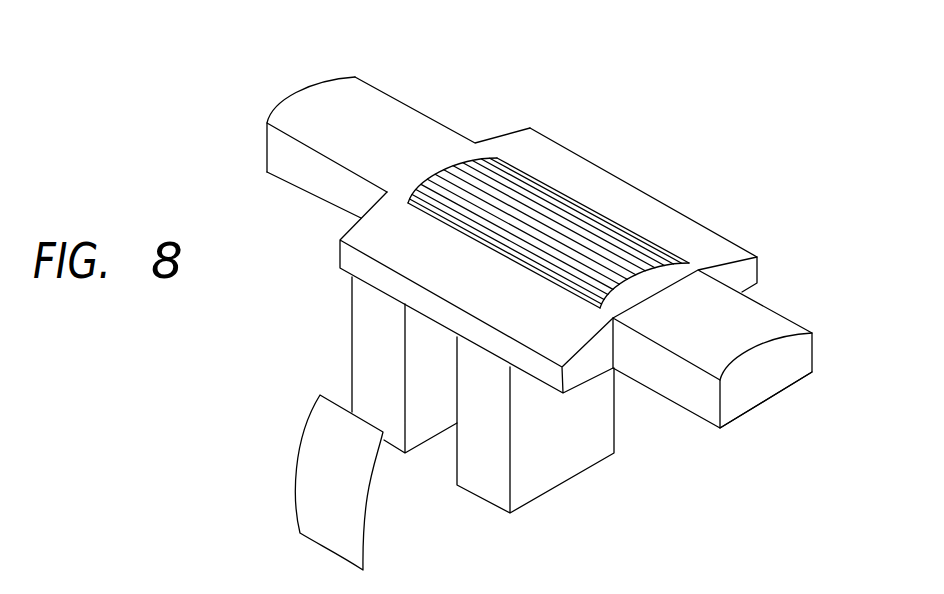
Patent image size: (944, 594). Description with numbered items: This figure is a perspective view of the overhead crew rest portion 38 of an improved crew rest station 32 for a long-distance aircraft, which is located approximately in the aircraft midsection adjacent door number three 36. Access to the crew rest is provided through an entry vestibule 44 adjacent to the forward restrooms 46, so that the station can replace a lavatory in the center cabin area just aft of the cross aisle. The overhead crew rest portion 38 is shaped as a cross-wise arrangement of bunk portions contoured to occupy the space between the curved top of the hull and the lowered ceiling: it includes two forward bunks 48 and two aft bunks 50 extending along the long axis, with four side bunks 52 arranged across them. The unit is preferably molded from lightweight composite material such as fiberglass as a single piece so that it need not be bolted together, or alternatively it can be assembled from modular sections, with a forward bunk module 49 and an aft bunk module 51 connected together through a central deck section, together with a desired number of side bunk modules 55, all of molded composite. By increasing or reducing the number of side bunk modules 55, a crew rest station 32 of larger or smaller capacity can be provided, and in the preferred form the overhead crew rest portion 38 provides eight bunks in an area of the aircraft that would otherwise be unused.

The crew rest station 32 is at (674, 159).
The door number three 36 is at (310, 485).
The overhead crew rest portion 38 is at (778, 414).
The entry vestibule 44 is at (558, 465).
The forward restrooms 46 is at (370, 362).
The forward bunks 48 is at (408, 121).
The forward bunk module 49 is at (307, 81).
The aft bunks 50 is at (757, 318).
The aft bunk module 51 is at (819, 341).
The side bunks 52 is at (365, 240).
The side bunk modules 55 is at (348, 206).